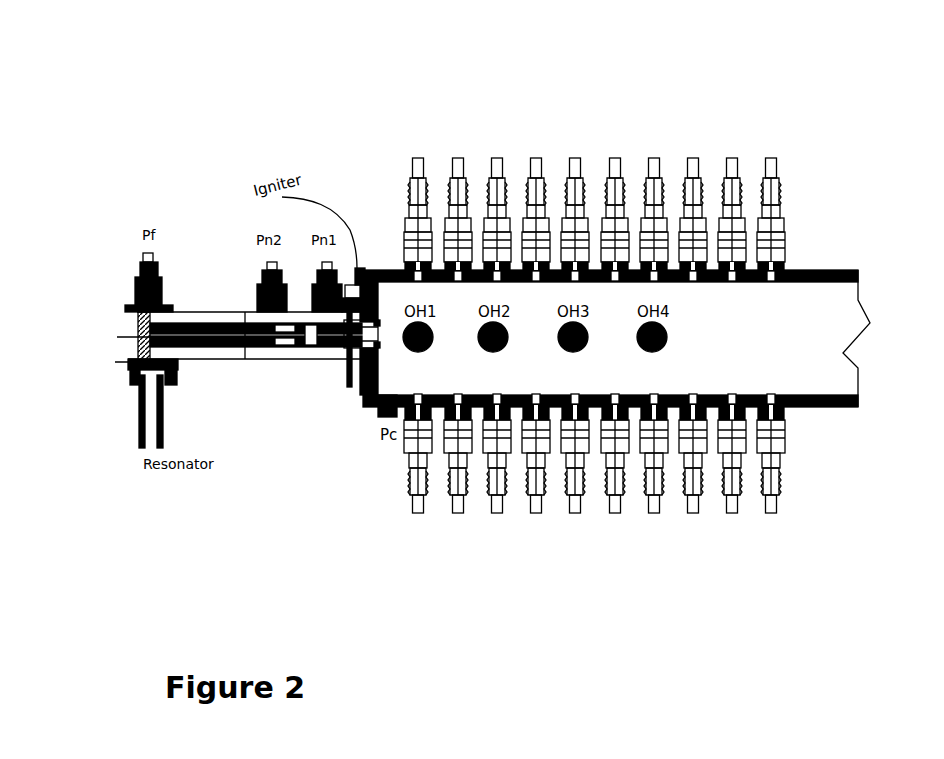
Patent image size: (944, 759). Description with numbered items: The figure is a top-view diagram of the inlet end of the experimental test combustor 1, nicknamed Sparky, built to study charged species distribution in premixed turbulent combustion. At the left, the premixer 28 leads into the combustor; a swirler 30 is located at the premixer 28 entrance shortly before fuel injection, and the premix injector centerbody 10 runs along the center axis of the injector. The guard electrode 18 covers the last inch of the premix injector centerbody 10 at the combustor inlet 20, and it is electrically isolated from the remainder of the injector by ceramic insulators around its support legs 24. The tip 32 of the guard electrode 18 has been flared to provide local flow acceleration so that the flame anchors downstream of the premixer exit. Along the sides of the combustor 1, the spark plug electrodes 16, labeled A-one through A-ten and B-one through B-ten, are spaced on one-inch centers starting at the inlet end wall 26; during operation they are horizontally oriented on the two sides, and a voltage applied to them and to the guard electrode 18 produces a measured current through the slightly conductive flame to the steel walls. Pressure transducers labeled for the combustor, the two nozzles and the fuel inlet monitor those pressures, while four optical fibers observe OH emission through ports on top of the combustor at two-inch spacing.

The combustor 1 is at (360, 560).
The premix injector centerbody 10 is at (291, 364).
The spark plug electrodes 16 is at (795, 140).
The guard electrode 18 is at (388, 357).
The combustor inlet 20 is at (371, 265).
The support legs 24 is at (347, 402).
The inlet end wall 26 is at (386, 268).
The premixer 28 is at (130, 372).
The swirler 30 is at (137, 323).
The tip 32 is at (391, 324).